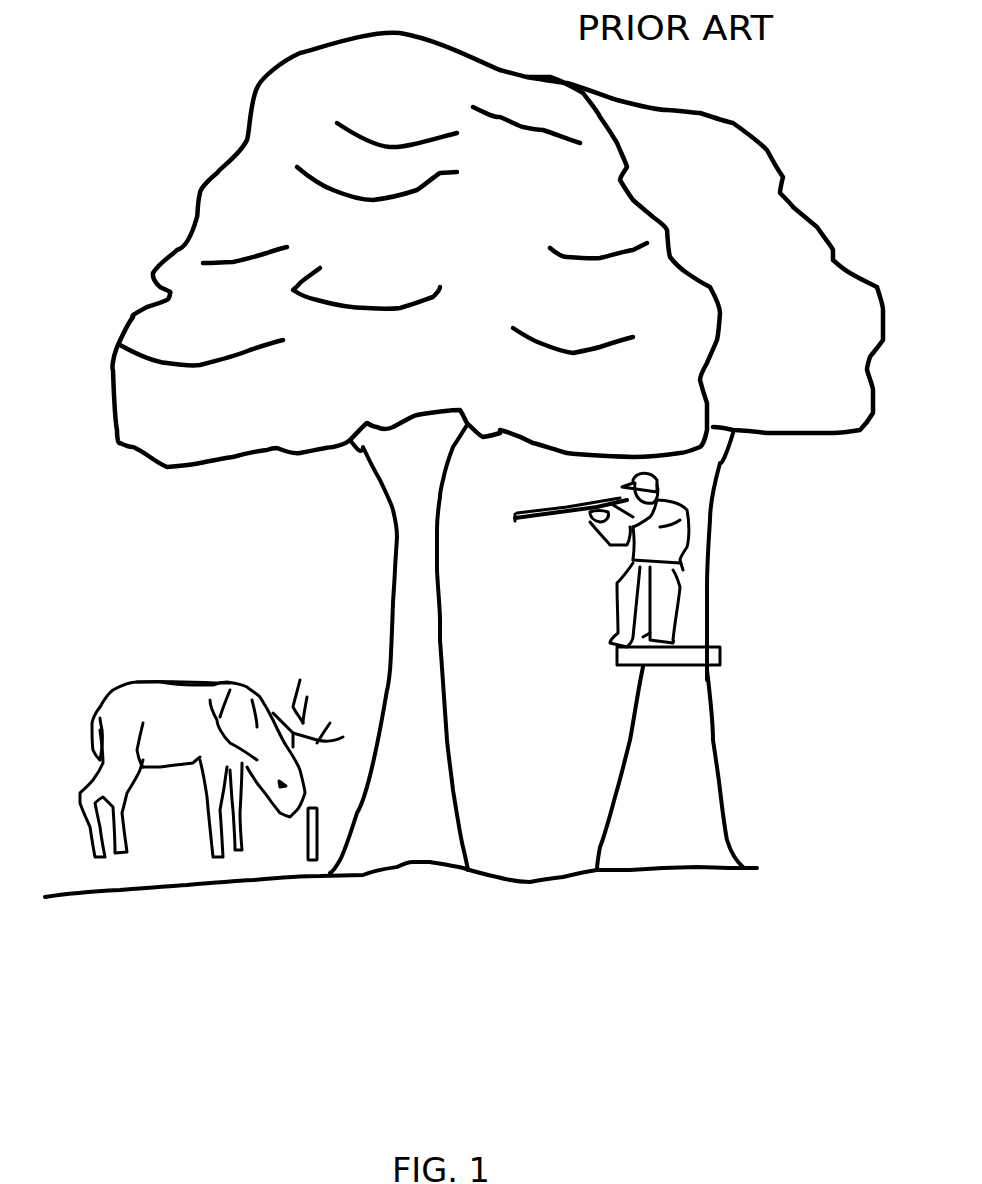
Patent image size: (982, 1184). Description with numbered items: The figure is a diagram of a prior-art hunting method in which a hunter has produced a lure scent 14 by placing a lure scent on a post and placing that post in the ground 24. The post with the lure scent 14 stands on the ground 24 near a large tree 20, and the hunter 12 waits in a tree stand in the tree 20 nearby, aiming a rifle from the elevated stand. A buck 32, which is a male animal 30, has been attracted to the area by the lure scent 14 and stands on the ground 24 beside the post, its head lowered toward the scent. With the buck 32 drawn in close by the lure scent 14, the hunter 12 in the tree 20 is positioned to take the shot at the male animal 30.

The hunter 12 is at (700, 543).
The lure scent 14 is at (313, 820).
The tree 20 is at (290, 103).
The ground 24 is at (220, 913).
The male animal 30 is at (100, 707).
The buck 32 is at (167, 697).